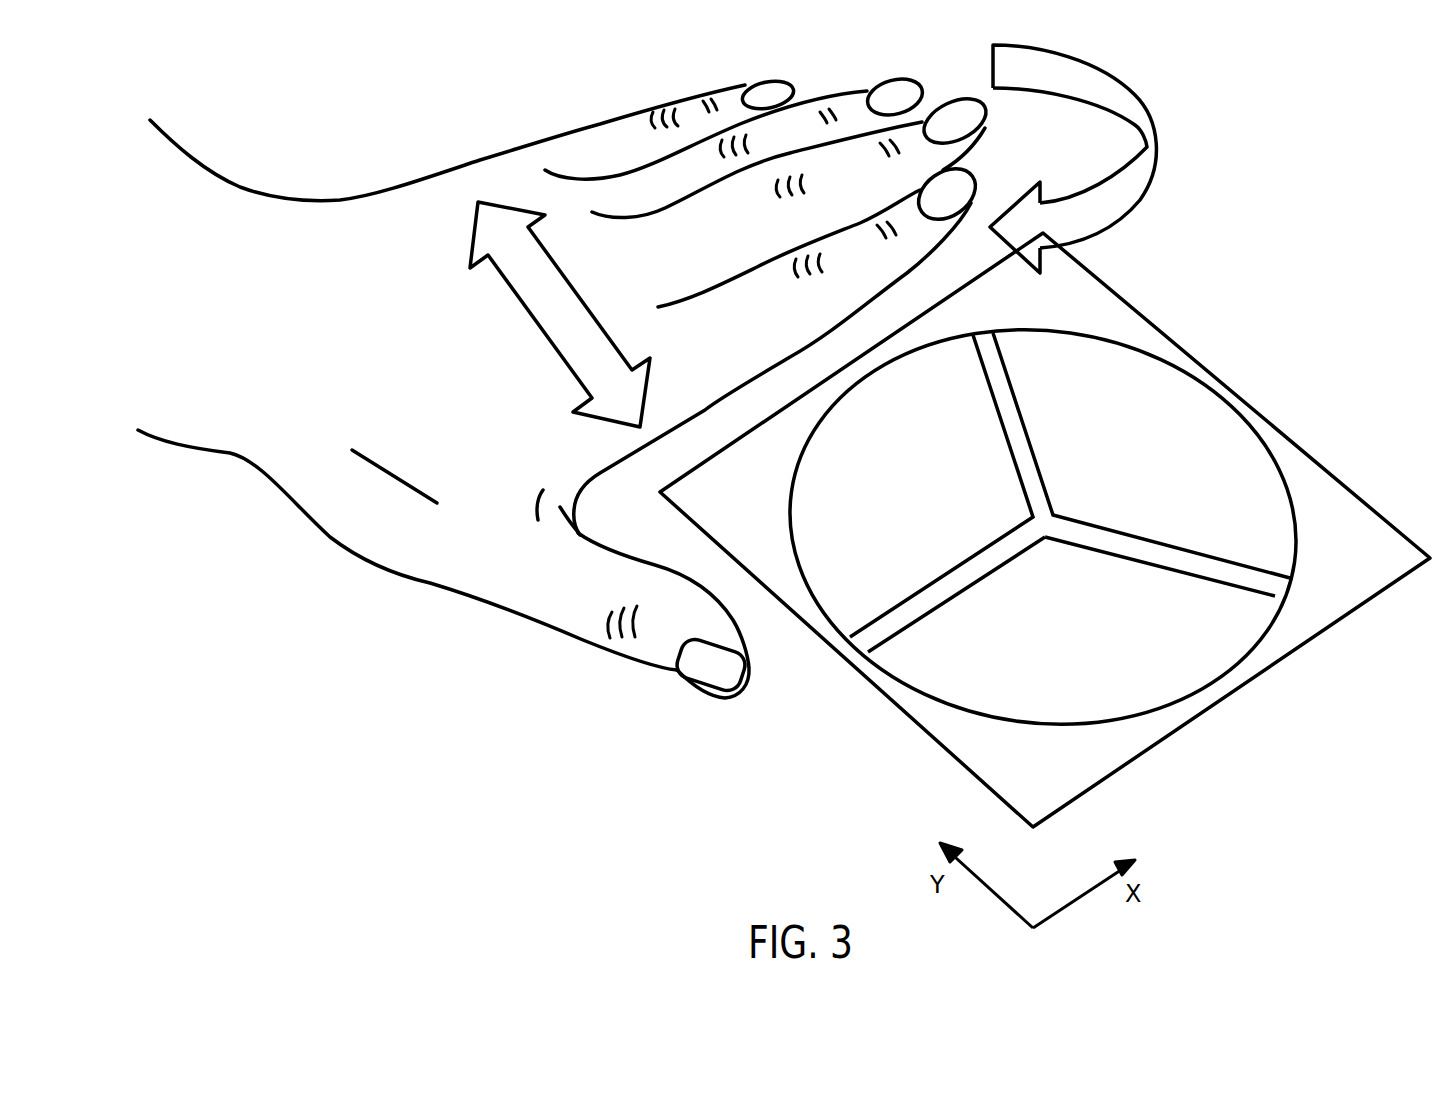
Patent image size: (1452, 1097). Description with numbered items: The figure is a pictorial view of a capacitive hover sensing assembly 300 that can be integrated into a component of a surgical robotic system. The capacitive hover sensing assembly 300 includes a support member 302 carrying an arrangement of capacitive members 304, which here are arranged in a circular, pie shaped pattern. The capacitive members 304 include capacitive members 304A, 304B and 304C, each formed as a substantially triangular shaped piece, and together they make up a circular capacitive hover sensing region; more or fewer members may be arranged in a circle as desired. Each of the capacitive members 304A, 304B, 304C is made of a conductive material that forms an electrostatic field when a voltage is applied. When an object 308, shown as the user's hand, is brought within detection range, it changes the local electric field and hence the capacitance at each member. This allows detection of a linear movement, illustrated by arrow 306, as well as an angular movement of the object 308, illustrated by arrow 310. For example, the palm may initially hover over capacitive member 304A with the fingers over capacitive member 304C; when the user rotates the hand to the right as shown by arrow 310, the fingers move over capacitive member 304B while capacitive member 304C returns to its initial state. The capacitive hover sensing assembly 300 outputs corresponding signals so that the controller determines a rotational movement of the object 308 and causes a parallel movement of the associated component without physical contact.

The capacitive hover sensing assembly 300 is at (1045, 530).
The support member 302 is at (1350, 490).
The capacitive members 304 is at (1043, 527).
The capacitive member 304A is at (1094, 641).
The capacitive member 304B is at (810, 718).
The capacitive member 304C is at (790, 713).
The arrow 306 is at (540, 335).
The object 308 is at (377, 527).
The arrow 310 is at (1147, 95).